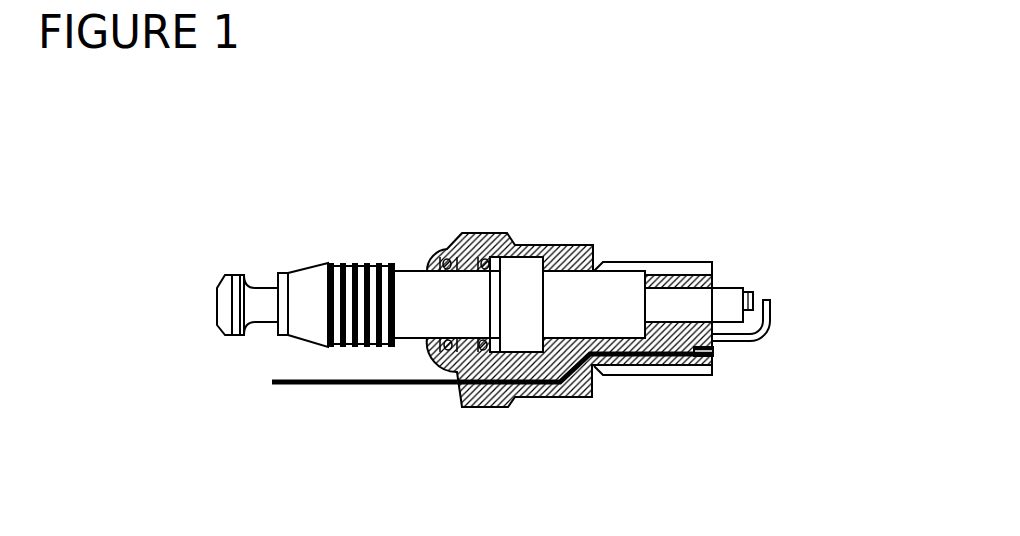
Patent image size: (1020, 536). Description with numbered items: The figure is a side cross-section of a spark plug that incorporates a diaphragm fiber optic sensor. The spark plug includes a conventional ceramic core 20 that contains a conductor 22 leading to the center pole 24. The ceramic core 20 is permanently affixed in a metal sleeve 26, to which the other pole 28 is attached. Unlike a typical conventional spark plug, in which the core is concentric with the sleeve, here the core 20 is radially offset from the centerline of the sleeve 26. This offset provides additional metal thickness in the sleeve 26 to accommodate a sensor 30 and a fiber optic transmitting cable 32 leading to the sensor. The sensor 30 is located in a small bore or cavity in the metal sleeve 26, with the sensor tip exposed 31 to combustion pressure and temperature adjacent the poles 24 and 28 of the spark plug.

The ceramic core 20 is at (496, 262).
The conductor 22 is at (182, 253).
The center pole 24 is at (823, 255).
The metal sleeve 26 is at (577, 283).
The other pole 28 is at (812, 350).
The sensor 30 is at (639, 432).
The sensor tip exposed 31 is at (752, 387).
The fiber optic transmitting cable 32 is at (482, 433).